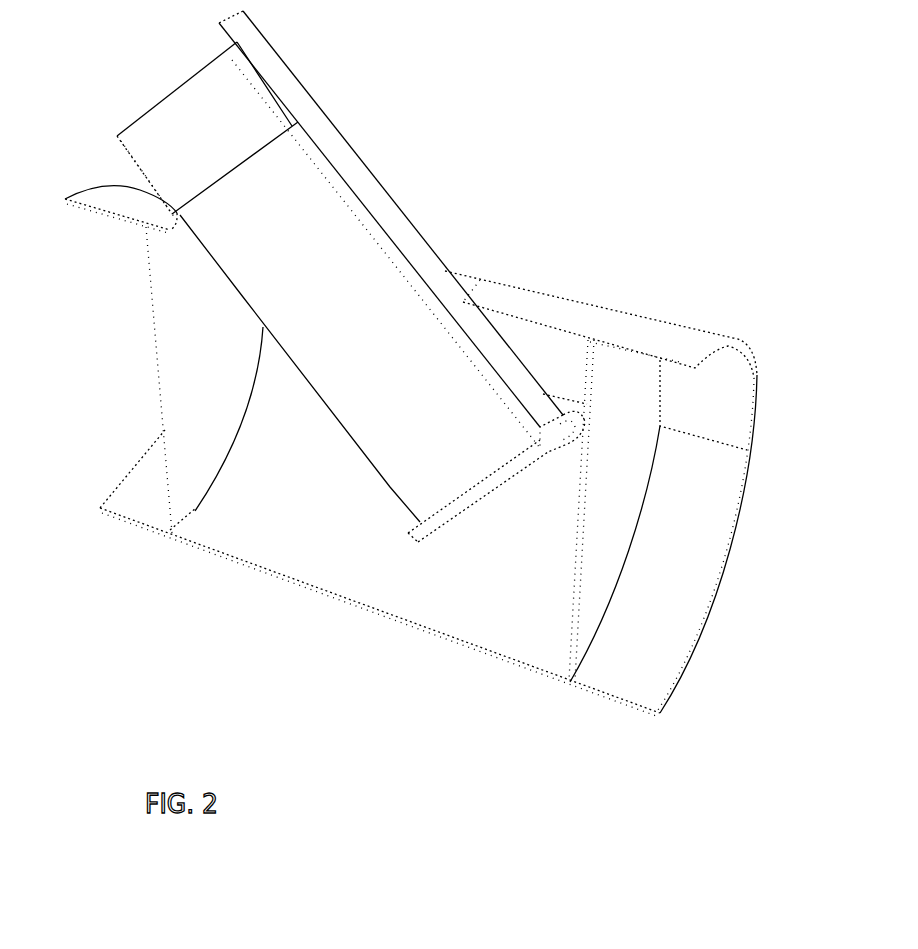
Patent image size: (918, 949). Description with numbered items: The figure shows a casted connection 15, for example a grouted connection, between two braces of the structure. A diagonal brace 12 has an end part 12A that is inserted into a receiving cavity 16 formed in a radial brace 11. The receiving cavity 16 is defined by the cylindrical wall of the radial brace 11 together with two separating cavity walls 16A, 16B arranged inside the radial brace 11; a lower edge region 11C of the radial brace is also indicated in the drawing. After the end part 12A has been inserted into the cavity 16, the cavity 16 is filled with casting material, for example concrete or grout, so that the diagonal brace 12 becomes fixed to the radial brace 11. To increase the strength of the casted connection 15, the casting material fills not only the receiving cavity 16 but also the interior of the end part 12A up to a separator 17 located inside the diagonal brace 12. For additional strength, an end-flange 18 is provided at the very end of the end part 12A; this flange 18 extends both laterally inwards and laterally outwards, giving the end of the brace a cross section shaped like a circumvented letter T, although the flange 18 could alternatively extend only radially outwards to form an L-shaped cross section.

The radial brace 11 is at (657, 332).
The bottom edge of hood 11C is at (370, 612).
The diagonal brace 12 is at (375, 197).
The end part 12A is at (517, 378).
The casted connection 15 is at (506, 144).
The receiving cavity 16 is at (298, 465).
The separating cavity wall 16A is at (170, 497).
The separating cavity wall 16B is at (577, 603).
The separator 17 is at (210, 183).
The end-flange 18 is at (423, 535).